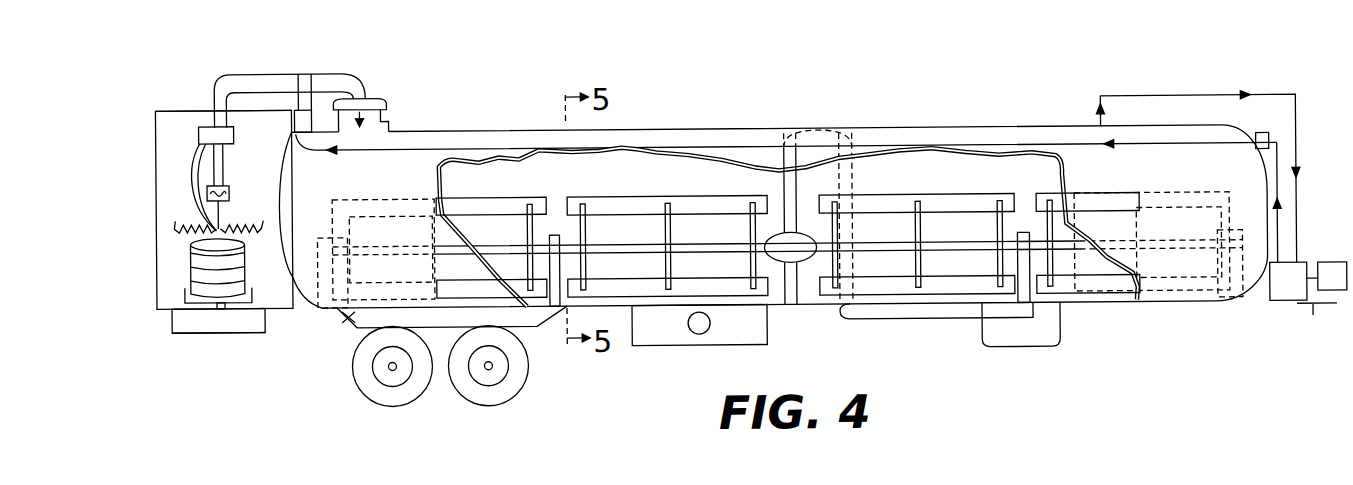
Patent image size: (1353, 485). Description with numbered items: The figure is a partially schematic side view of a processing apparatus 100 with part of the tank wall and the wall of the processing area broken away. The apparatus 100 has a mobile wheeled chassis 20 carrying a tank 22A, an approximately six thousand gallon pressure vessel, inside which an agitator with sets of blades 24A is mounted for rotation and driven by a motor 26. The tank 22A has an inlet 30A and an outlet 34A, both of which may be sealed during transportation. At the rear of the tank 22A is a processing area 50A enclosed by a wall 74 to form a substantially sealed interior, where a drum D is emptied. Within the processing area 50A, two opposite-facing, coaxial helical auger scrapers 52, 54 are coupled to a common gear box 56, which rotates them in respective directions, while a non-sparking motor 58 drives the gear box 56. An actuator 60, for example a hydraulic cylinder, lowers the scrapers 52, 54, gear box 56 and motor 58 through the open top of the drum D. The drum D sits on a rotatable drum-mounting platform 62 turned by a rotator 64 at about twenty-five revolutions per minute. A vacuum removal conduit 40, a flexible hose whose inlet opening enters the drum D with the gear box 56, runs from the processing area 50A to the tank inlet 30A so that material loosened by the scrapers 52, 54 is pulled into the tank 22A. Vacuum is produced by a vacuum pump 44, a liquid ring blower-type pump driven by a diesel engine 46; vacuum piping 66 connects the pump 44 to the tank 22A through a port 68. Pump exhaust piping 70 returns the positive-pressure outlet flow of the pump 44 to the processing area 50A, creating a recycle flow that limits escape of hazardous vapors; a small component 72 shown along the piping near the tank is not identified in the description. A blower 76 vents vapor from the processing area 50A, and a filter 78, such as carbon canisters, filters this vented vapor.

The processing apparatus 100 is at (938, 96).
The mobile wheeled chassis 20 is at (348, 318).
The tank 22A is at (655, 132).
The blades 24A is at (476, 205).
The motor 26 is at (803, 263).
The inlet 30A is at (388, 123).
The outlet 34A is at (689, 331).
The vacuum removal conduit 40 is at (257, 73).
The vacuum pump 44 is at (1279, 309).
The diesel engine 46 is at (1337, 299).
The processing area 50A is at (197, 104).
The scraper 52 is at (185, 229).
The scraper 54 is at (267, 220).
The gear box 56 is at (222, 220).
The motor 58 is at (197, 190).
The actuator 60 is at (235, 143).
The drum-mounting platform 62 is at (245, 310).
The rotator 64 is at (183, 323).
The vacuum piping 66 is at (1195, 102).
The port 68 is at (1101, 131).
The pump exhaust piping 70 is at (1000, 149).
The sensor 72 is at (1263, 140).
The wall 74 is at (172, 110).
The blower 76 is at (300, 74).
The filter 78 is at (335, 80).
The drum D is at (245, 279).